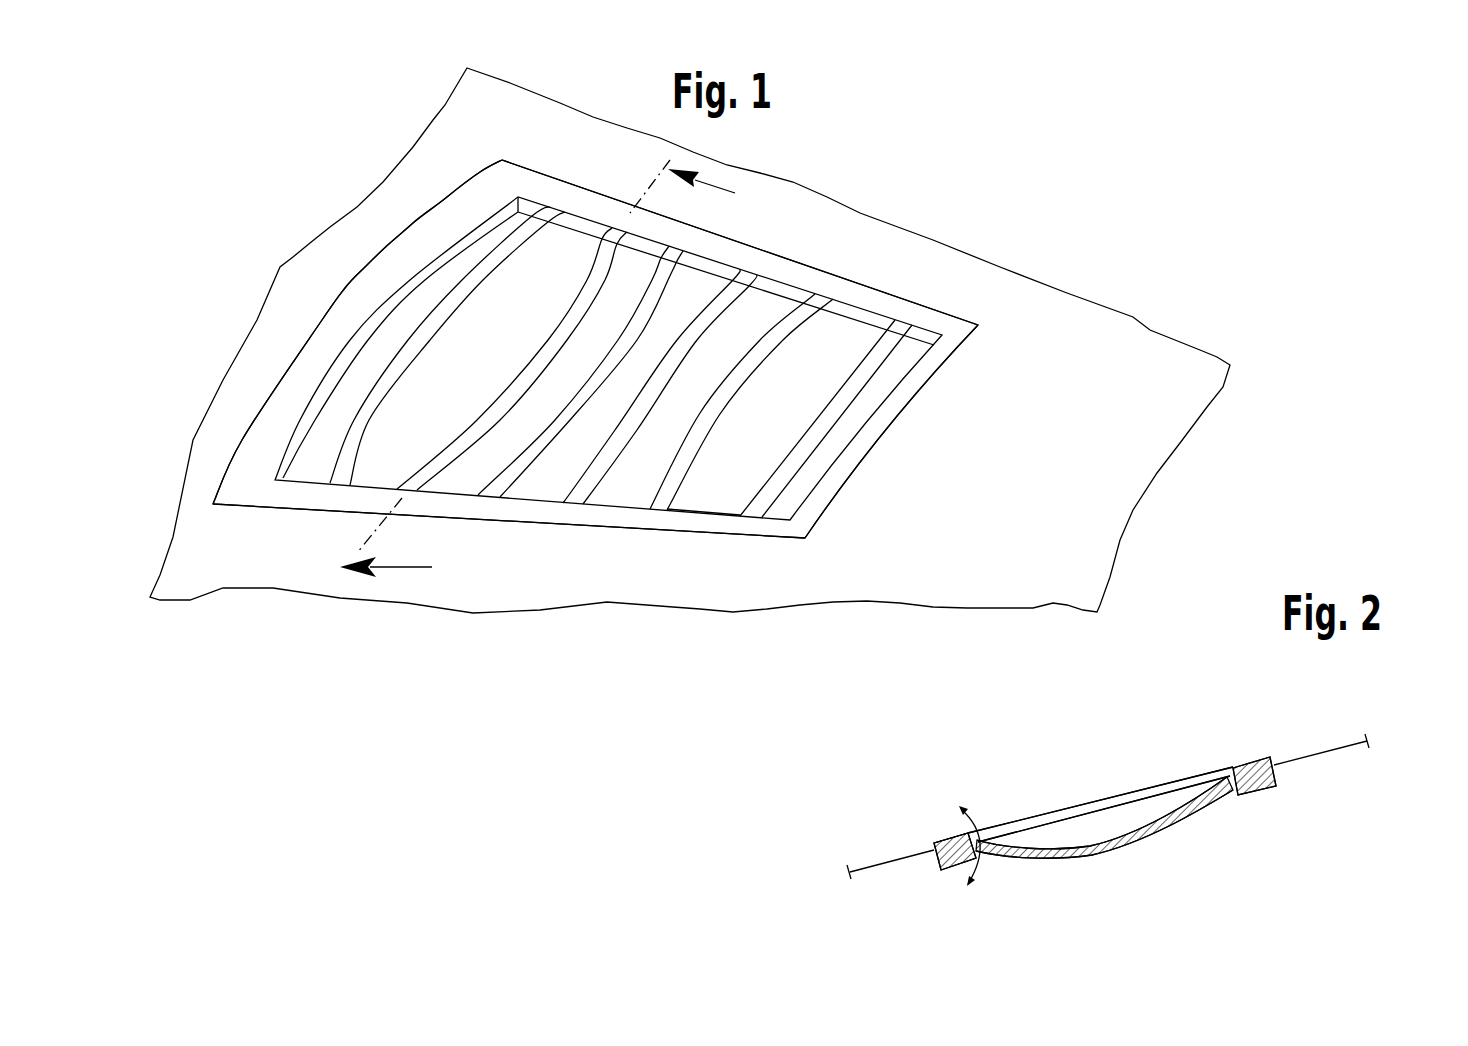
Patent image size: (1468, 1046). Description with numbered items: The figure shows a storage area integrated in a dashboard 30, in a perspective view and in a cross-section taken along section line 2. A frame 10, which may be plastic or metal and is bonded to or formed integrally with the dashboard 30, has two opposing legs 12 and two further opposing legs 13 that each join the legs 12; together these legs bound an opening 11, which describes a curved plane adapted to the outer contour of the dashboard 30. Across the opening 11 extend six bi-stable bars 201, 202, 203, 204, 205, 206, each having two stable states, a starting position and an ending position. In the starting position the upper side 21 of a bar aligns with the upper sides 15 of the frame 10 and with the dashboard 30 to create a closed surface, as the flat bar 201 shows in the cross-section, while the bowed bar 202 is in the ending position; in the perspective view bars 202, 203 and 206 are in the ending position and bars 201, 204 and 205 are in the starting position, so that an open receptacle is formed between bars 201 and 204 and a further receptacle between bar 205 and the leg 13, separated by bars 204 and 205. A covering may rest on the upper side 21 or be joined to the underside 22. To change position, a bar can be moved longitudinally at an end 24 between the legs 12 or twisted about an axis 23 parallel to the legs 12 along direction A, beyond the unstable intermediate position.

In FIG. 1, the frame 10 is at (888, 288).
In FIG. 1, the opening 11 is at (720, 465).
In FIG. 1, the legs 12 is at (790, 270).
In FIG. 2, the legs 12 is at (937, 866).
In FIG. 1, the legs 13 is at (347, 310).
In FIG. 2, the upper sides 15 is at (1248, 764).
In FIG. 1, the bar 201 is at (333, 462).
In FIG. 2, the bar 201 is at (1040, 814).
In FIG. 1, the bar 202 is at (490, 420).
In FIG. 2, the bar 202 is at (1173, 823).
In FIG. 1, the bar 203 is at (510, 477).
In FIG. 1, the bar 204 is at (603, 480).
In FIG. 1, the bar 205 is at (682, 482).
In FIG. 1, the bar 206 is at (773, 487).
In FIG. 2, the upper side 21 is at (1107, 793).
In FIG. 2, the underside 22 is at (1022, 862).
In FIG. 2, the axis 23 is at (950, 846).
In FIG. 2, the end 24 is at (948, 821).
In FIG. 1, the dashboard 30 is at (1075, 360).
In FIG. 2, the dashboard 30 is at (1317, 743).
In FIG. 2, the direction A is at (988, 862).
In FIG. 1, the section line 2 is at (526, 368).